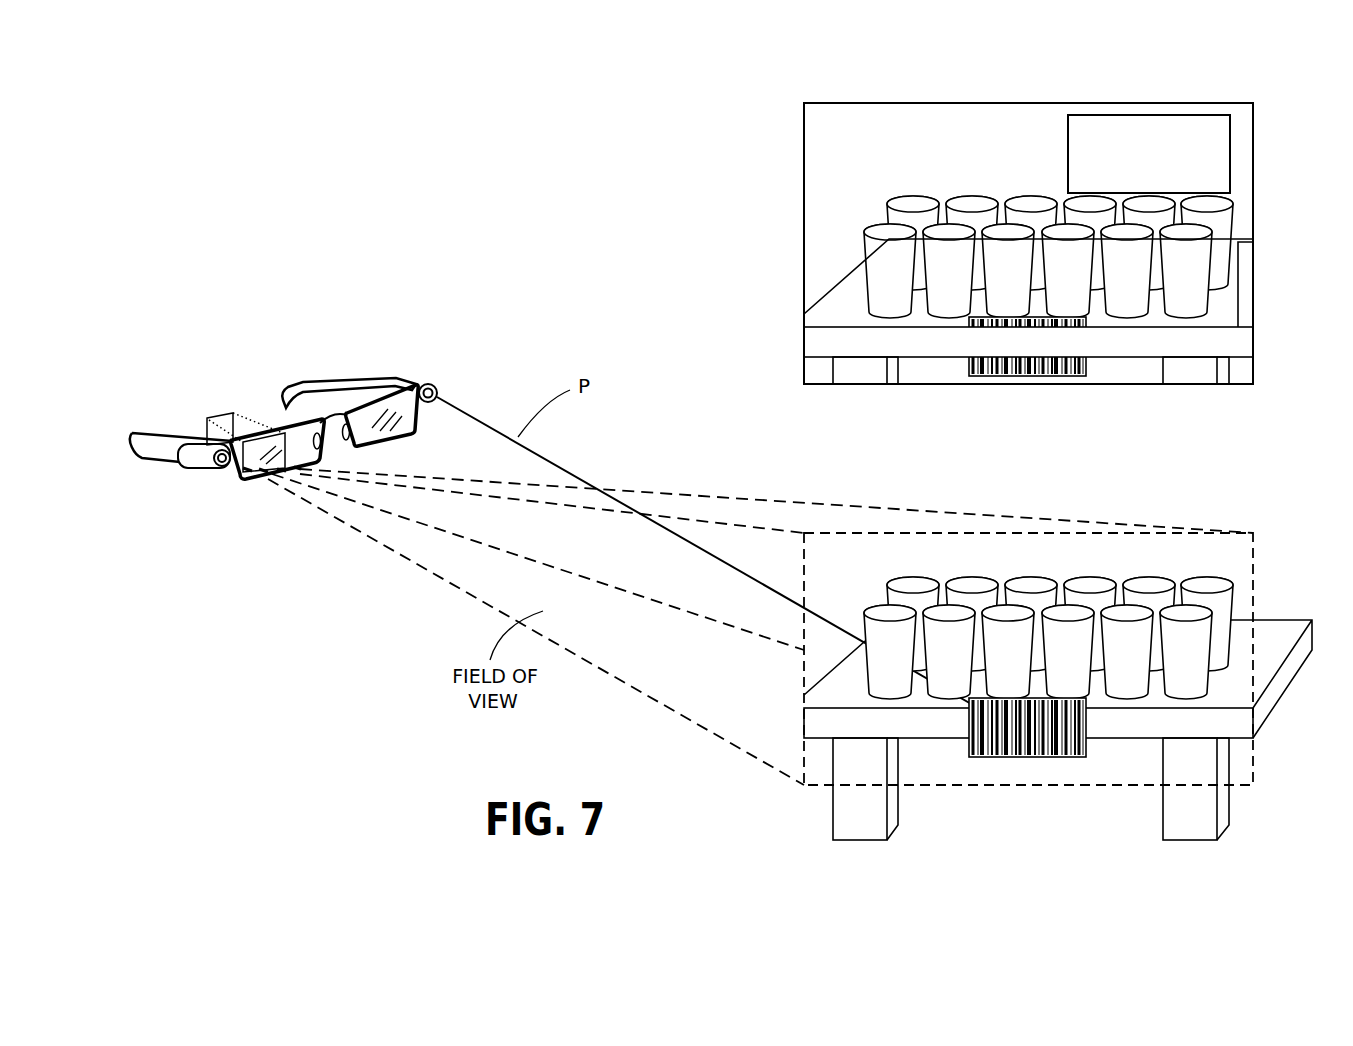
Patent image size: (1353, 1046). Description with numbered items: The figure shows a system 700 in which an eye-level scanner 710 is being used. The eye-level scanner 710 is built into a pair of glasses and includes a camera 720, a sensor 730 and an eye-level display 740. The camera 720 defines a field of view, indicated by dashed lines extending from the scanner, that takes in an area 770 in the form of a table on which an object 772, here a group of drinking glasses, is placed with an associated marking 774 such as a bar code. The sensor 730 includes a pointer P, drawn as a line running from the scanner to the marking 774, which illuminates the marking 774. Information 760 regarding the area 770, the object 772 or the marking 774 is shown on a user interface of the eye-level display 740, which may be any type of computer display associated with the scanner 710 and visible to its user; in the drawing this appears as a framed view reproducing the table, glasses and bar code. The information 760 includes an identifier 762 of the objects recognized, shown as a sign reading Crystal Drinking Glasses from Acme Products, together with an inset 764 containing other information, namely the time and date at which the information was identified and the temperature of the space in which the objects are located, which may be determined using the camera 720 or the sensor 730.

The system 700 is at (658, 282).
The eye-level scanner 710 is at (718, 306).
The camera 720 is at (198, 452).
The sensor 730 is at (413, 385).
The eye-level display 740 is at (257, 445).
The information 760 is at (837, 100).
The identifier 762 is at (1160, 115).
The inset 764 is at (897, 128).
The area 770 is at (1270, 632).
The object 772 is at (1188, 552).
The marking 774 is at (997, 738).